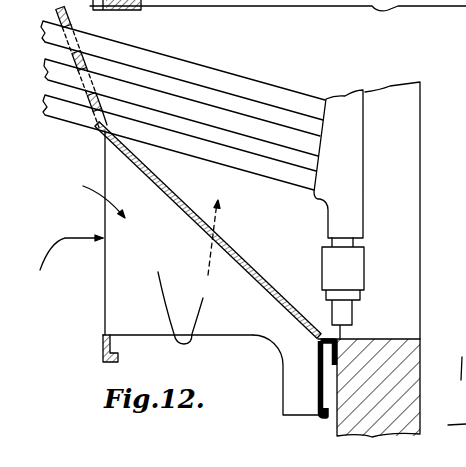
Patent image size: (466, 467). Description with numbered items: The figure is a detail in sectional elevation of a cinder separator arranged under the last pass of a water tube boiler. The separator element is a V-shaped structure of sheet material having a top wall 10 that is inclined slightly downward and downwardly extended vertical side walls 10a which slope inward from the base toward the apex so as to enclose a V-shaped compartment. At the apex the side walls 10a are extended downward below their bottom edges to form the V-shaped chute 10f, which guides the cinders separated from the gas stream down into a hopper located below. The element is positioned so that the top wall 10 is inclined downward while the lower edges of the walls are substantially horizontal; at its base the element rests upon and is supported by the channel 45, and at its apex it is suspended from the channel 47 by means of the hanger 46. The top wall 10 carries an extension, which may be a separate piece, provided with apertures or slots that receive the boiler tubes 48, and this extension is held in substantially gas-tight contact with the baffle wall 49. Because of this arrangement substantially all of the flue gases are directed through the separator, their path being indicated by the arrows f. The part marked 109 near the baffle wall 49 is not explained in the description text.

The sheet member 10 is at (183, 208).
The body portion of sheet member 10a is at (120, 283).
The flange portion of sheet member 10f is at (285, 372).
The foot strip 45 is at (103, 347).
The channel member 46 is at (318, 386).
The block 47 is at (348, 345).
The support bars 48 is at (62, 115).
The pin 49 is at (107, 110).
The pin end 109 is at (103, 127).
The fabric f is at (160, 305).